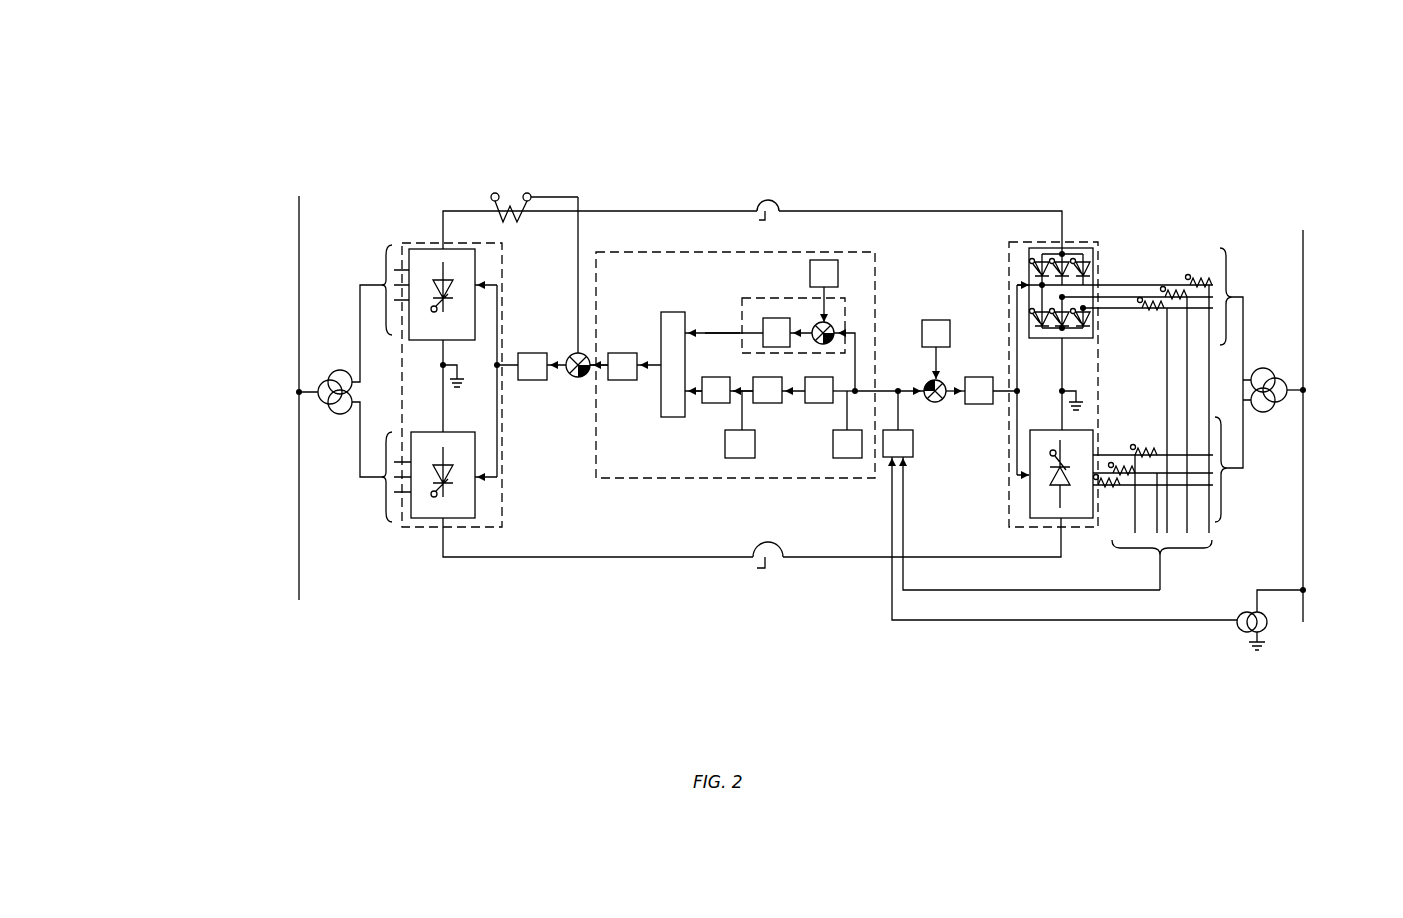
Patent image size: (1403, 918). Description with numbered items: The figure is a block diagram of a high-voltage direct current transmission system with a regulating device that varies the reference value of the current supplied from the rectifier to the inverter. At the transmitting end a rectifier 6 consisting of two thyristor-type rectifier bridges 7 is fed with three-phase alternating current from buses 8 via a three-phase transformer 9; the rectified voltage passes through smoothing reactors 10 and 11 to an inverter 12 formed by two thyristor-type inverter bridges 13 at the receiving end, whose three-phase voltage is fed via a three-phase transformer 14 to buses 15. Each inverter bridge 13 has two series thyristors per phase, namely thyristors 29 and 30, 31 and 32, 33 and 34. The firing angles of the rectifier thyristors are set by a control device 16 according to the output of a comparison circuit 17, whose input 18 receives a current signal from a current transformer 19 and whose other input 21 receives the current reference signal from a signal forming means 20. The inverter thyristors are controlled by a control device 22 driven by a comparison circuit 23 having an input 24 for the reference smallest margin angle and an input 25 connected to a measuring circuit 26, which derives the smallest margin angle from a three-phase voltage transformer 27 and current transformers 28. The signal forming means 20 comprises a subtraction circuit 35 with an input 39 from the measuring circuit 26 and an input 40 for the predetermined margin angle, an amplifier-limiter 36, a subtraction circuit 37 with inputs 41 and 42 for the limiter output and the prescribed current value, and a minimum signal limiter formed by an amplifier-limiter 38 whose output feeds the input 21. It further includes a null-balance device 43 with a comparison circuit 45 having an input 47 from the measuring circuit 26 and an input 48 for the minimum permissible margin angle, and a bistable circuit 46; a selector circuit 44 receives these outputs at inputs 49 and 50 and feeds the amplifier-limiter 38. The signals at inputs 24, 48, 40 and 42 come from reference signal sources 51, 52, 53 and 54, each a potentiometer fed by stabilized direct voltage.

The rectifier 6 is at (402, 527).
The rectifier bridges 7 is at (432, 566).
The buses 8 is at (298, 247).
The three-phase transformer 9 is at (318, 380).
The smoothing reactor 10 is at (760, 204).
The smoothing reactor 11 is at (757, 570).
The inverter 12 is at (1099, 356).
The inverter bridges 13 is at (1086, 248).
The three-phase transformer 14 is at (1265, 368).
The buses 15 is at (1304, 270).
The control device 16 is at (538, 381).
The comparison circuit 17 is at (586, 352).
The input of comparison circuit 18 is at (578, 352).
The current transformer 19 is at (505, 195).
The signal forming means 20 is at (624, 478).
The input of comparison circuit 21 is at (603, 382).
The control device 22 is at (975, 376).
The comparison circuit 23 is at (935, 402).
The input of comparison circuit 24 is at (940, 362).
The input of comparison circuit 25 is at (900, 389).
The measuring circuit 26 is at (885, 458).
The three-phase voltage transformer 27 is at (1239, 636).
The current transformers 28 is at (1055, 632).
The thyristor 29 is at (1038, 267).
The thyristor 30 is at (1036, 320).
The thyristor 31 is at (1059, 262).
The thyristor 32 is at (1056, 330).
The thyristor 33 is at (1088, 262).
The thyristor 34 is at (1088, 320).
The subtraction circuit 35 is at (812, 403).
The amplifier-limiter 36 is at (765, 403).
The subtraction circuit 37 is at (712, 403).
The amplifier-limiter 38 is at (620, 352).
The input of subtraction circuit 39 is at (836, 395).
The input of subtraction circuit 40 is at (844, 417).
The input of subtraction circuit 41 is at (741, 388).
The input of subtraction circuit 42 is at (745, 421).
The null-balance device 43 is at (756, 298).
The selector circuit 44 is at (668, 336).
The comparison circuit 45 is at (815, 323).
The bistable circuit 46 is at (775, 318).
The input of comparison circuit 47 is at (858, 332).
The input of comparison circuit 48 is at (826, 312).
The input of selector circuit 49 is at (690, 389).
The input of selector circuit 50 is at (712, 332).
The reference signal source 51 is at (945, 320).
The reference signal source 52 is at (816, 259).
The reference signal source 53 is at (840, 458).
The reference signal source 54 is at (733, 458).